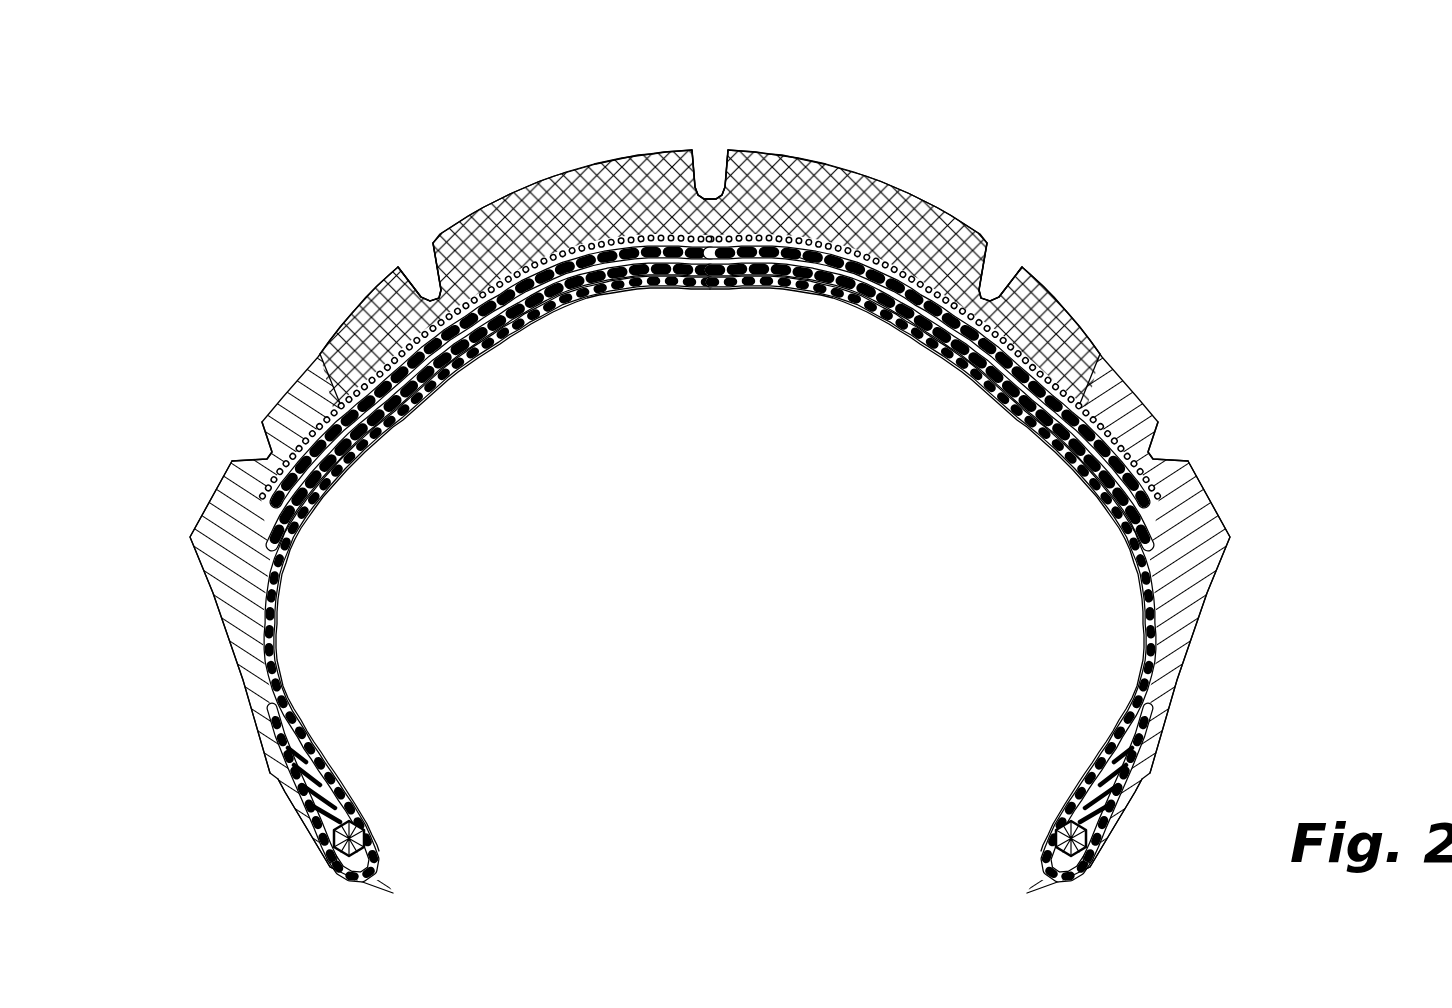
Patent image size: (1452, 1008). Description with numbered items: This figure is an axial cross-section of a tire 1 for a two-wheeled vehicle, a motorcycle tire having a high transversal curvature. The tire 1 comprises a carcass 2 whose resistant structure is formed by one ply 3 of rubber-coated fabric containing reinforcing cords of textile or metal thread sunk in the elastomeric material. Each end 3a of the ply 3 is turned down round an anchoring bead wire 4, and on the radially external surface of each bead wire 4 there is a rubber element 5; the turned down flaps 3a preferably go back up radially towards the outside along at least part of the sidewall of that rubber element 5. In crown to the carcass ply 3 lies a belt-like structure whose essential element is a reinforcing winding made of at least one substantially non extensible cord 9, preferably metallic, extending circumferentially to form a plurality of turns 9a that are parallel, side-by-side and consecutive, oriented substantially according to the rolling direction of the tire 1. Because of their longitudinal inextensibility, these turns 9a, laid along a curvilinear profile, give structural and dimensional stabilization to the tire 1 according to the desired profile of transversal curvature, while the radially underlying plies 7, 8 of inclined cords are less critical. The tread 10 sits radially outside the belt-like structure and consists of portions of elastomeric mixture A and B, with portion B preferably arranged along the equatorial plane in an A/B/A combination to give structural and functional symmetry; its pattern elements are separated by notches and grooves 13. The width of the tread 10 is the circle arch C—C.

The tire 1 is at (330, 245).
The carcass 2 is at (300, 598).
The ply 3 is at (340, 735).
The turned down end of ply 3a is at (327, 790).
The anchoring bead wire 4 is at (380, 835).
The rubber element 5 is at (370, 783).
The radially underlying ply of inclined cords 7 is at (343, 487).
The radially underlying ply of inclined cords 8 is at (383, 442).
The substantially non extensible cord 9 is at (415, 398).
The turns 9a is at (817, 265).
The tread 10 is at (645, 198).
The groove 13 is at (420, 258).
The elastomeric mixture portion A is at (1117, 393).
The elastomeric mixture portion B is at (880, 213).
The circle arch end point C is at (708, 617).